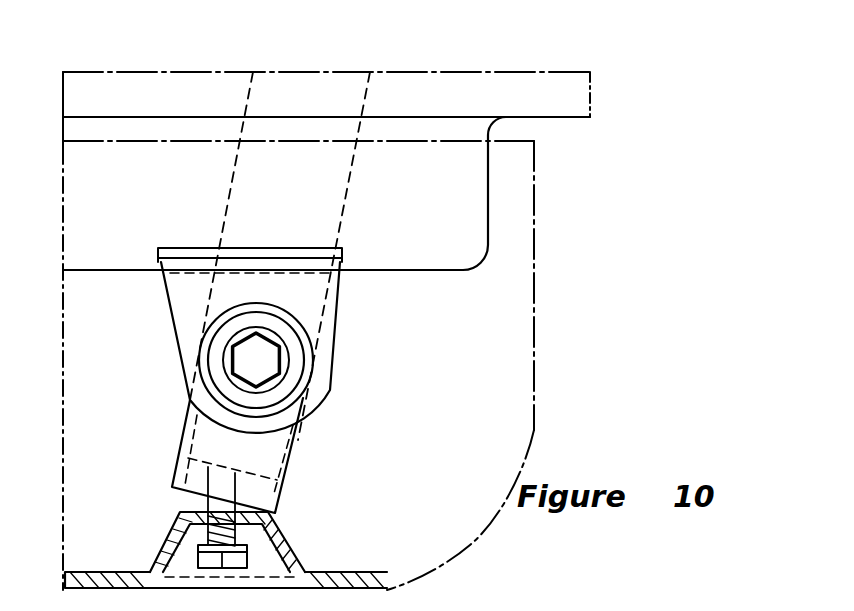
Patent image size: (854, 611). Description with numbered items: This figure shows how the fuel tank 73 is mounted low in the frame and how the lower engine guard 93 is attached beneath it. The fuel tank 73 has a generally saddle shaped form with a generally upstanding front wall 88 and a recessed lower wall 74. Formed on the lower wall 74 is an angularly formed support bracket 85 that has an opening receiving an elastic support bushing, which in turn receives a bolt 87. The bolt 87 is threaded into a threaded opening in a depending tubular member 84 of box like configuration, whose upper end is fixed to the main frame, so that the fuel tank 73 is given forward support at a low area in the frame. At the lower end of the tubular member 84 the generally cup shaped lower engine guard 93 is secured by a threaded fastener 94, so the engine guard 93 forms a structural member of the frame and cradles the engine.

The fuel tank 73 is at (580, 88).
The front wall 88 is at (545, 117).
The lower wall 74 is at (472, 226).
The lower engine guard 93 is at (534, 343).
The support bracket 85 is at (333, 295).
The bolt 87 is at (262, 362).
The depending tubular member 84 is at (270, 447).
The threaded fastener 94 is at (277, 563).